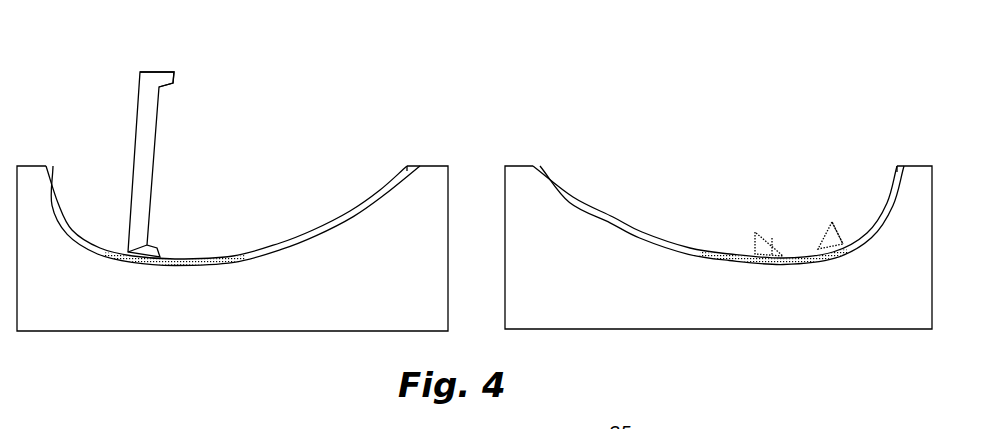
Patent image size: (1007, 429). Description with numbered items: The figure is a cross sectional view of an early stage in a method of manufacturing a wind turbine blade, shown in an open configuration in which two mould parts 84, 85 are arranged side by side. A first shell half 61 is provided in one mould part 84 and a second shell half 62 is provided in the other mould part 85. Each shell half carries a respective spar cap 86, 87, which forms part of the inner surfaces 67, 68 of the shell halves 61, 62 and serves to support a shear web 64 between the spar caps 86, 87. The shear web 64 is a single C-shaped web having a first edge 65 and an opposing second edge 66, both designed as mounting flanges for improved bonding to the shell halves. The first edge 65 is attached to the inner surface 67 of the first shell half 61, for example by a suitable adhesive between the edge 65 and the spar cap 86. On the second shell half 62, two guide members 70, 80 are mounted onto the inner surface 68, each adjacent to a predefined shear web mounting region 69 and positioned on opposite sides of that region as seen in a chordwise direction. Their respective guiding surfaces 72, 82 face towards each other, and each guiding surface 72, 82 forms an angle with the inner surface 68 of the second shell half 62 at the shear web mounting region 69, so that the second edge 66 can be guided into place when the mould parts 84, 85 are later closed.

The first shell half 61 is at (315, 228).
The second shell half 62 is at (642, 232).
The shear web 64 is at (142, 158).
The first edge 65 is at (123, 252).
The second edge 66 is at (152, 72).
The inner surface 67 is at (247, 248).
The inner surface 68 is at (611, 211).
The shear web mounting region 69 is at (797, 236).
The guide member 70 is at (758, 233).
The guiding surface 72 is at (777, 245).
The guide member 80 is at (840, 231).
The guiding surface 82 is at (823, 228).
The mould part 84 is at (92, 315).
The mould part 85 is at (862, 312).
The spar cap 86 is at (207, 257).
The spar cap 87 is at (720, 252).